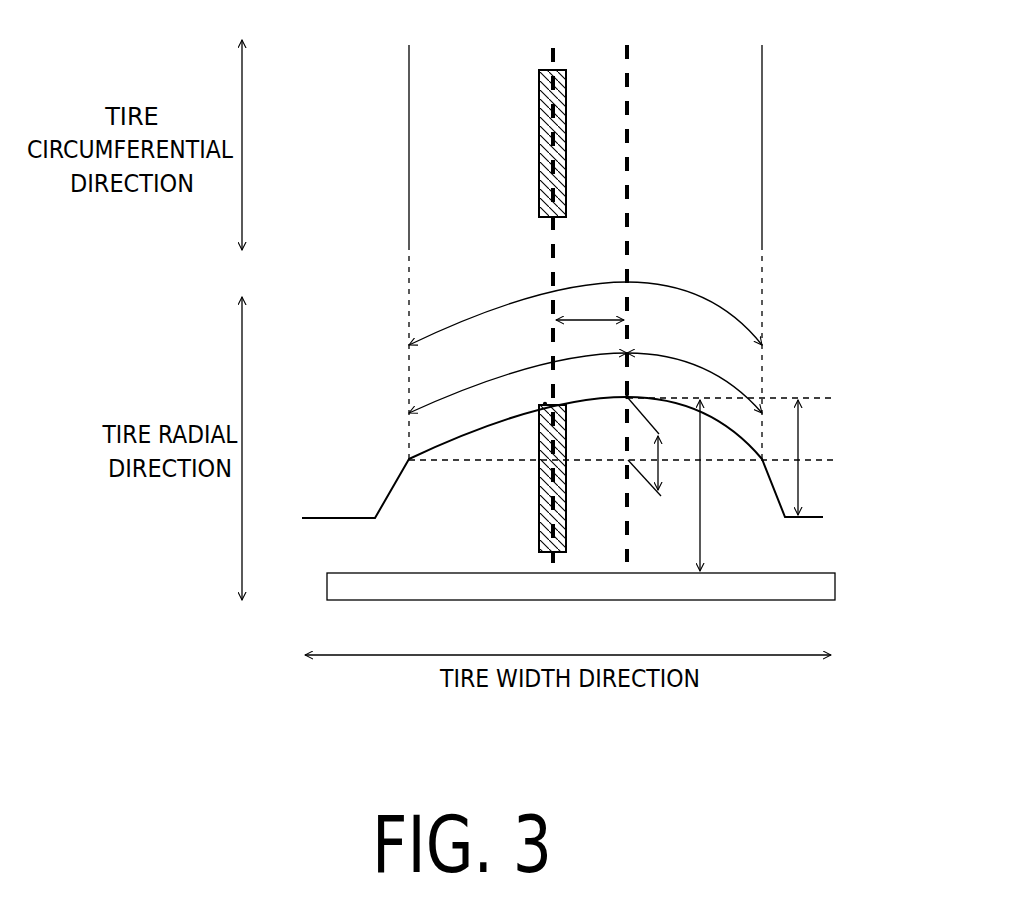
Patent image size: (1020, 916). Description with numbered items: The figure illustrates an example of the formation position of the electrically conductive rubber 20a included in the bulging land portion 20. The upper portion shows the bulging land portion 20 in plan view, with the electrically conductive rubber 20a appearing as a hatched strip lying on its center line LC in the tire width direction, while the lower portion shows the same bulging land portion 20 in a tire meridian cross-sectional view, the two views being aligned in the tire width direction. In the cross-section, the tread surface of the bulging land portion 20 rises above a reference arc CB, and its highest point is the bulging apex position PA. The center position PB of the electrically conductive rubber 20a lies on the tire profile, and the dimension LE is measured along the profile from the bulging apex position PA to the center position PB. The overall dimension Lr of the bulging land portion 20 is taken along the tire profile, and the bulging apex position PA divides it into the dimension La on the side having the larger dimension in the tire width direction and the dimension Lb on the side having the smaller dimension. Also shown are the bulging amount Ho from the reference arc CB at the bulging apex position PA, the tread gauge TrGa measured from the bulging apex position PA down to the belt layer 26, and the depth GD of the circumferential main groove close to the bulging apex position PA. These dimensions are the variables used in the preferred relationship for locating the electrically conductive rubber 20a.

The bulging land portion 20 is at (606, 103).
The electrically conductive rubber 20a is at (539, 142).
The belt layer 26 is at (836, 587).
The center line LC is at (553, 291).
The reference arc CB is at (481, 463).
The bulging apex position PA is at (630, 397).
The center position PB is at (545, 403).
The overall dimension Lr is at (585, 301).
The dimension on larger side La is at (518, 375).
The dimension on smaller side Lb is at (694, 375).
The dimension from apex to conductive rubber center LE is at (590, 306).
The bulging amount Ho is at (659, 447).
The tread gauge TrGa is at (730, 485).
The depth of circumferential main groove GD is at (814, 457).